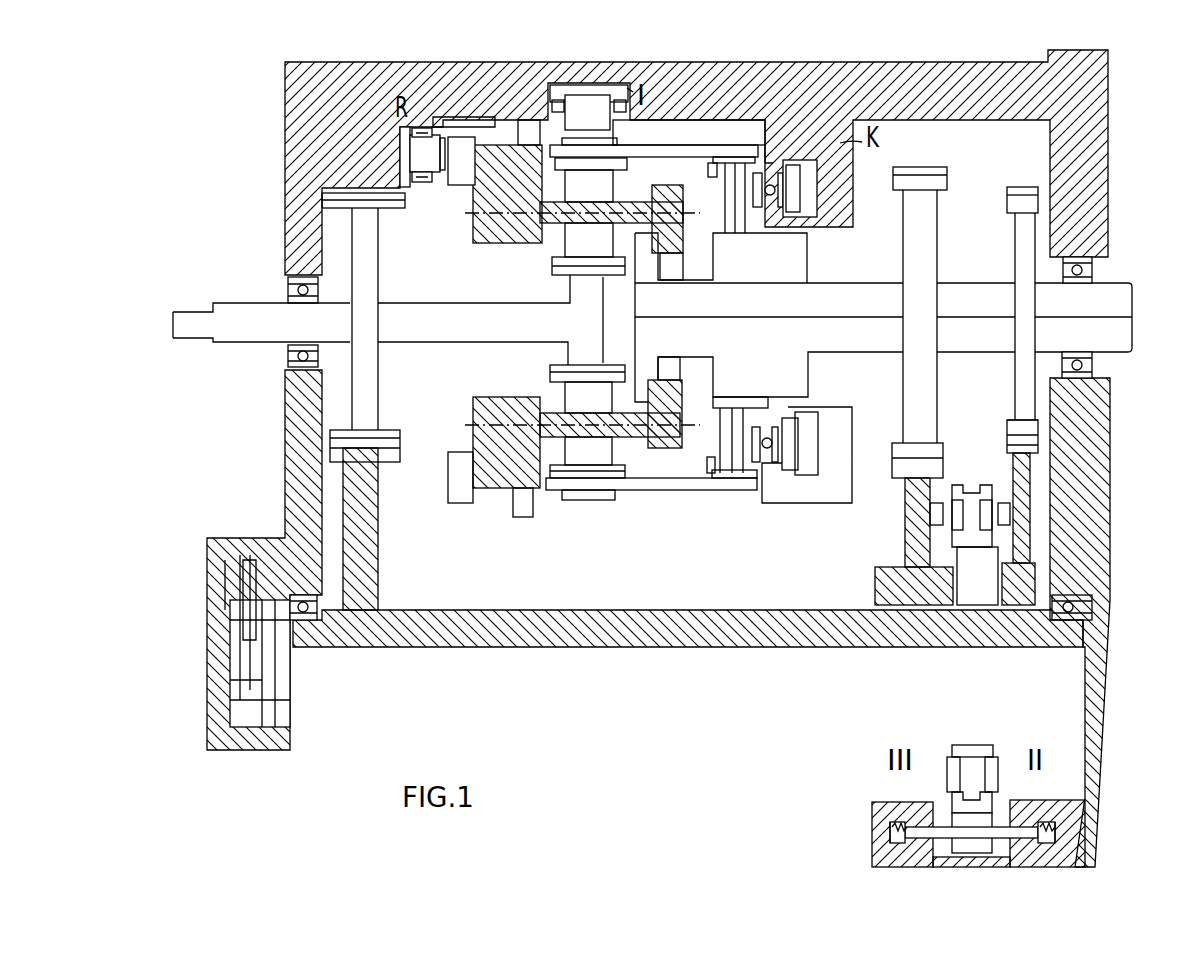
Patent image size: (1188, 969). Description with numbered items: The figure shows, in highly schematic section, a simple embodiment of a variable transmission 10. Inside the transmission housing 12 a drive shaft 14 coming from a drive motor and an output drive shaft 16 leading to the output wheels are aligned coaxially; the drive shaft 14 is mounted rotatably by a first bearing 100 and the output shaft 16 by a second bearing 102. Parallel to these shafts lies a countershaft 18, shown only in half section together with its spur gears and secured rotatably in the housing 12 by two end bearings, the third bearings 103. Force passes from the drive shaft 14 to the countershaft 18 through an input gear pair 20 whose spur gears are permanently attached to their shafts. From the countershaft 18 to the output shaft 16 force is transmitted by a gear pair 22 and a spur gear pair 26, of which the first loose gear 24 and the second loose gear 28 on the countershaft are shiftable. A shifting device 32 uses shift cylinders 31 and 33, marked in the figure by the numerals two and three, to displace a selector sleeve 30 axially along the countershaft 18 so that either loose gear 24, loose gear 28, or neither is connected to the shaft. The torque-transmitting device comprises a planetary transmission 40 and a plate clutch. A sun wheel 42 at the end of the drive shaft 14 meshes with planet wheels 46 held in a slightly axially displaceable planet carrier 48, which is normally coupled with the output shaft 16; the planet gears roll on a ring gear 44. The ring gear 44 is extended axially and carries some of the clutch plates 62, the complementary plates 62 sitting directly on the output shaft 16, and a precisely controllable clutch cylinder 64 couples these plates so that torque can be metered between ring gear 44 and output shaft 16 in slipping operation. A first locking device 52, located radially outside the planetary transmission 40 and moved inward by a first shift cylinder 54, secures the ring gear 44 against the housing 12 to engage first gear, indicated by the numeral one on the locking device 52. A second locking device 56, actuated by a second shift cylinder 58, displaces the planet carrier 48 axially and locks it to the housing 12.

The variable transmission 10 is at (248, 80).
The transmission housing 12 is at (308, 145).
The drive shaft 14 is at (245, 320).
The output drive shaft 16 is at (1110, 300).
The countershaft 18 is at (555, 640).
The input gear pair 20 is at (365, 392).
The gear pair 22 is at (915, 420).
The first loose gear 24 is at (915, 590).
The spur gear pair 26 is at (1020, 482).
The second loose gear 28 is at (1022, 600).
The selector sleeve 30 is at (975, 545).
The shift cylinder 31 is at (880, 825).
The shifting device 32 is at (860, 845).
The shift cylinder 33 is at (1050, 832).
The planetary transmission 40 is at (520, 267).
The sun wheel 42 is at (585, 345).
The ring gear 44 is at (690, 150).
The planet wheels 46 is at (578, 170).
The planet carrier 48 is at (552, 222).
The first locking device 52 is at (593, 108).
The first shift cylinder 54 is at (623, 95).
The second locking device 56 is at (425, 180).
The second shift cylinder 58 is at (412, 128).
The clutch plates 62 is at (745, 210).
The clutch cylinder 64 is at (790, 200).
The first bearing 100 is at (290, 358).
The second bearing 102 is at (1092, 365).
The third bearing 103 is at (310, 610).